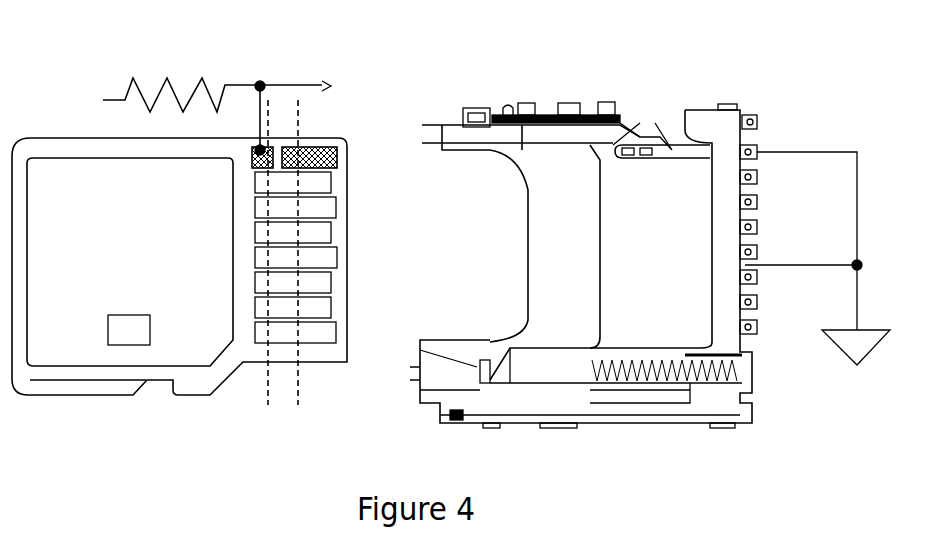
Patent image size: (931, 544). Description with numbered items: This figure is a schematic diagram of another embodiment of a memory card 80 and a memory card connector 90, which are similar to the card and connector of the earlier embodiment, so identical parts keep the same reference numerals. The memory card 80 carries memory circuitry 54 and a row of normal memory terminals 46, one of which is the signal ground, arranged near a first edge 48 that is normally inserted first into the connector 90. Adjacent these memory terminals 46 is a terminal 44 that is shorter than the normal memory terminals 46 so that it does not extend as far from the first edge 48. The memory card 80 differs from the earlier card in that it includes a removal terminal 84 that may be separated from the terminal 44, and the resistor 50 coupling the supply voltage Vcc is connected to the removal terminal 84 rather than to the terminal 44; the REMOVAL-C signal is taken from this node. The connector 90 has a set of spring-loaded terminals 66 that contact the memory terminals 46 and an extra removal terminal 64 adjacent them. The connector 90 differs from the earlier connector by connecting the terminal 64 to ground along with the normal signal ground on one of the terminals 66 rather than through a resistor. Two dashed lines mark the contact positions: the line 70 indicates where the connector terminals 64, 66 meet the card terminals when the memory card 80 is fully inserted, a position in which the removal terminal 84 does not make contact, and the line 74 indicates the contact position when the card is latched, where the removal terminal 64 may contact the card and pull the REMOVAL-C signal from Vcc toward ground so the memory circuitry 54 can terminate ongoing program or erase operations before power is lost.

The resistor 50 is at (167, 74).
The removal terminal 84 is at (259, 146).
The terminal 44 is at (314, 150).
The first edge 48 is at (348, 157).
The memory card 80 is at (140, 274).
The memory circuitry 54 is at (139, 340).
The memory terminals 46 is at (352, 172).
The line 70 is at (266, 389).
The line 74 is at (300, 378).
The memory card connector 90 is at (661, 253).
The removal terminal 64 is at (745, 138).
The terminals 66 is at (758, 167).